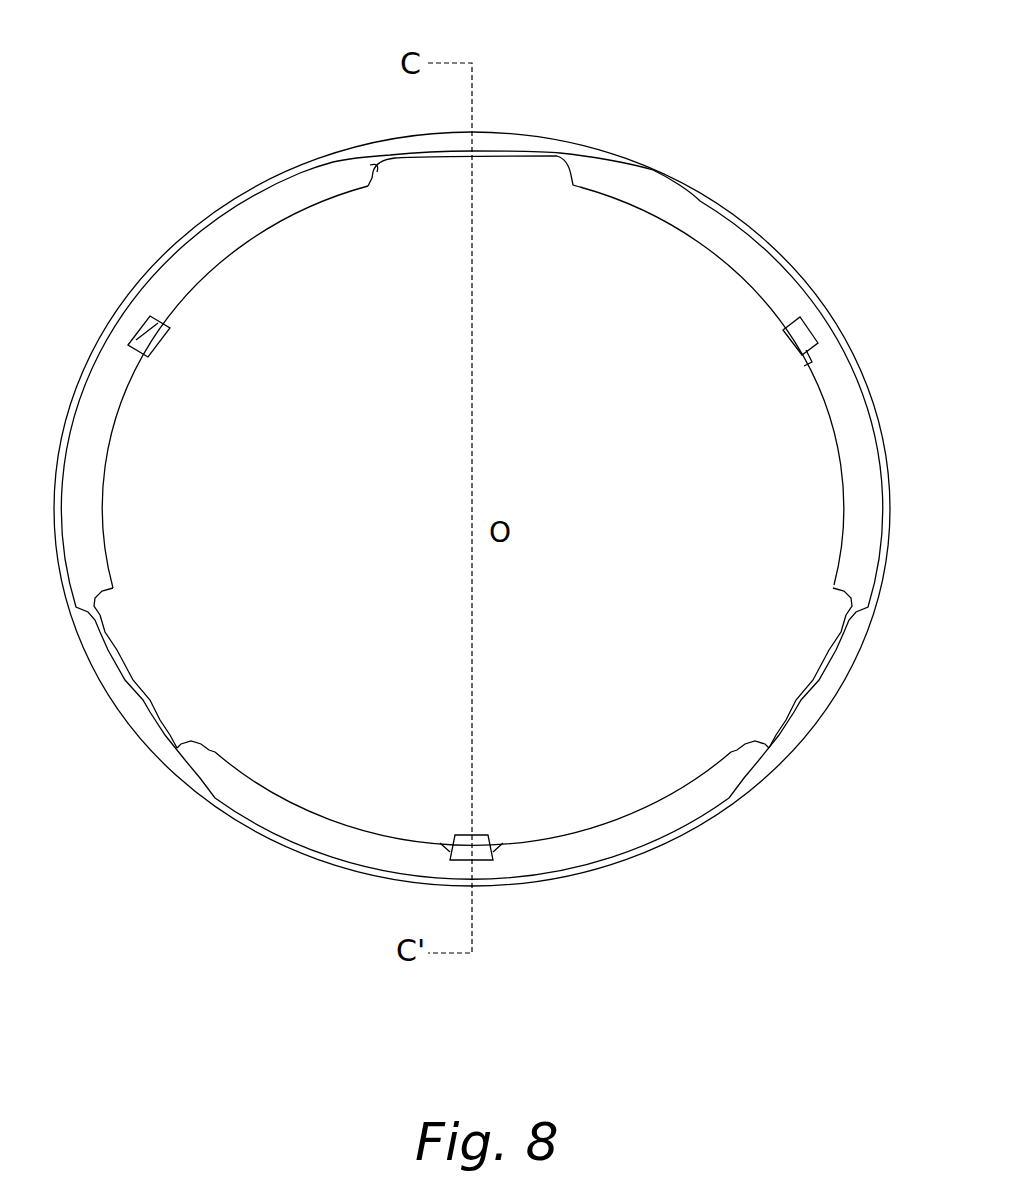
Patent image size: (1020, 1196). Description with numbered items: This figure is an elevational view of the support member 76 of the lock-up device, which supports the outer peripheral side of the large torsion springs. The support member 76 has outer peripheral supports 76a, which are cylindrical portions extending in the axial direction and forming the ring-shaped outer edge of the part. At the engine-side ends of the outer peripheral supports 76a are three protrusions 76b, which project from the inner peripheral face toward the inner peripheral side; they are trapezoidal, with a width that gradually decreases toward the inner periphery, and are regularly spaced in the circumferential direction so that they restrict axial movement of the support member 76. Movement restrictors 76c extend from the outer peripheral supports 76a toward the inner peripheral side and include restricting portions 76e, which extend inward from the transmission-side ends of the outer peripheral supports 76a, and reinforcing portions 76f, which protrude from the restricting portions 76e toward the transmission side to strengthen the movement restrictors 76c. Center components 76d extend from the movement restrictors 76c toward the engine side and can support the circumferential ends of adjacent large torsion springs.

The support member 76 is at (615, 133).
The outer peripheral supports 76a is at (660, 167).
The protrusions 76b is at (519, 134).
The movement restrictors 76c is at (606, 190).
The center components 76d is at (166, 344).
The restricting portions 76e is at (693, 232).
The reinforcing portions 76f is at (514, 159).